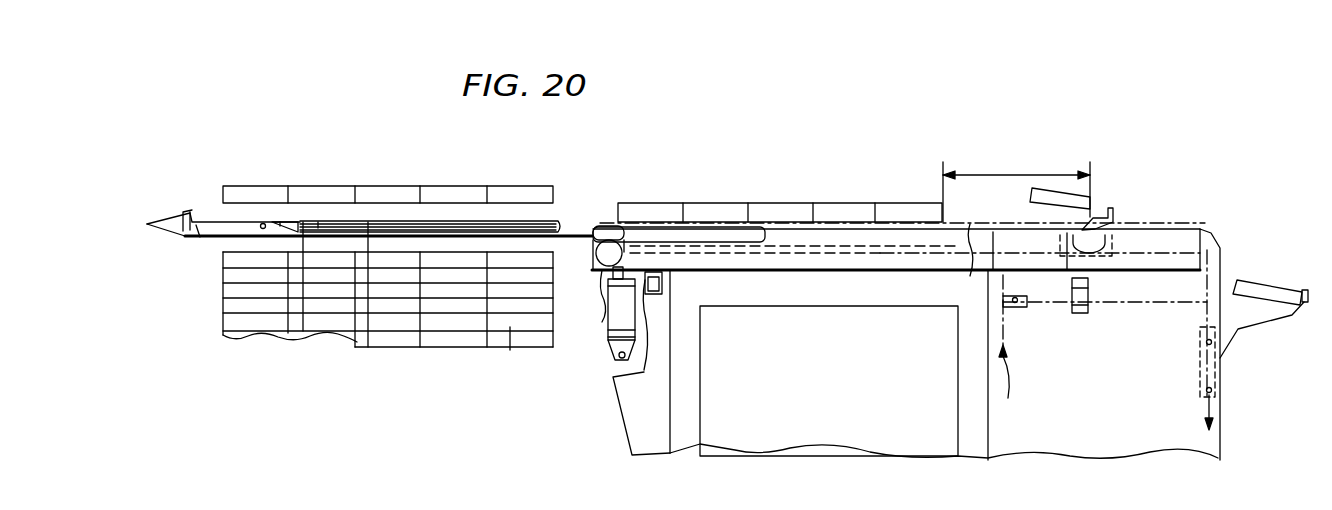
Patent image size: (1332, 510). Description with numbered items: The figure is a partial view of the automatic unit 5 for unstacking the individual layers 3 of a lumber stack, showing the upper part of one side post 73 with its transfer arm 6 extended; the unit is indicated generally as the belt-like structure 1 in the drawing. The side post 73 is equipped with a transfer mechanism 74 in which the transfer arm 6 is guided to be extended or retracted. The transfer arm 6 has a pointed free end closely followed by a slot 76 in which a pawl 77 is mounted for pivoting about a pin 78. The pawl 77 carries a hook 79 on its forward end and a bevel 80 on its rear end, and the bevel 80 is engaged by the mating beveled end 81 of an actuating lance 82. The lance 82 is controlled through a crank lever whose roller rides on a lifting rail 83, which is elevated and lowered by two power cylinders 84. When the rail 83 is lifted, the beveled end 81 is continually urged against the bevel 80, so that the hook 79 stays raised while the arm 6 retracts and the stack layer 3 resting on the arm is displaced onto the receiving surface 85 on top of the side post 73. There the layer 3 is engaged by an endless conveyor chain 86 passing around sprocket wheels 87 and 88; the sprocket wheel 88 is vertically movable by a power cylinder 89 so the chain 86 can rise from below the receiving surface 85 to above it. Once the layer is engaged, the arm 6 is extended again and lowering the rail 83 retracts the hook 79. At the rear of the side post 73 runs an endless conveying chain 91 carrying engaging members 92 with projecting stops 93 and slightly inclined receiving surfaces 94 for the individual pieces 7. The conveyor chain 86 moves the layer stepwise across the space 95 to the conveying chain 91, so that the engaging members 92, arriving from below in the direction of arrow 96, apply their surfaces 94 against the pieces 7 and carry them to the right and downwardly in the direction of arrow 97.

The reinforced conveyor belt 1 is at (357, 343).
The stack layer 3 is at (370, 193).
The automatic unit 5 is at (810, 404).
The transfer arm 6 is at (453, 350).
The individual piece 7 is at (1030, 195).
The side post 73 is at (877, 404).
The transfer mechanism 74 is at (1191, 238).
The slot 76 is at (197, 238).
The pawl 77 is at (216, 221).
The pin 78 is at (264, 223).
The hook 79 is at (185, 233).
The bevel 80 is at (280, 224).
The beveled end 81 is at (318, 224).
The actuating lance 82 is at (390, 224).
The lifting rail 83 is at (825, 252).
The power cylinder 84 is at (655, 298).
The receiving surface 85 is at (785, 226).
The endless conveyor chain 86 is at (876, 206).
The sprocket wheel 87 is at (1112, 236).
The sprocket wheel 88 is at (605, 223).
The power cylinder 89 is at (618, 309).
The endless conveying chain 91 is at (1214, 268).
The engaging member 92 is at (1042, 211).
The projecting stop 93 is at (1118, 212).
The receiving surface 94 is at (1094, 217).
The space 95 is at (1008, 175).
The arrow 96 is at (1103, 352).
The arrow 97 is at (1216, 412).